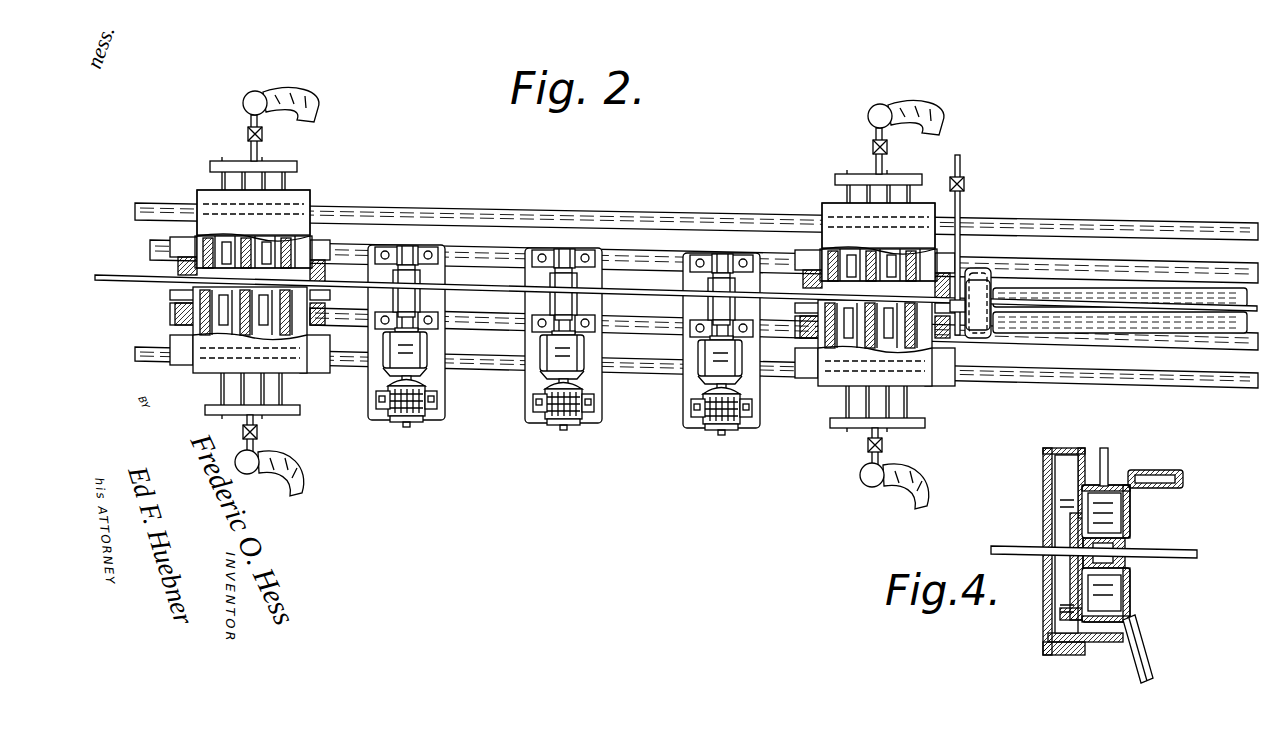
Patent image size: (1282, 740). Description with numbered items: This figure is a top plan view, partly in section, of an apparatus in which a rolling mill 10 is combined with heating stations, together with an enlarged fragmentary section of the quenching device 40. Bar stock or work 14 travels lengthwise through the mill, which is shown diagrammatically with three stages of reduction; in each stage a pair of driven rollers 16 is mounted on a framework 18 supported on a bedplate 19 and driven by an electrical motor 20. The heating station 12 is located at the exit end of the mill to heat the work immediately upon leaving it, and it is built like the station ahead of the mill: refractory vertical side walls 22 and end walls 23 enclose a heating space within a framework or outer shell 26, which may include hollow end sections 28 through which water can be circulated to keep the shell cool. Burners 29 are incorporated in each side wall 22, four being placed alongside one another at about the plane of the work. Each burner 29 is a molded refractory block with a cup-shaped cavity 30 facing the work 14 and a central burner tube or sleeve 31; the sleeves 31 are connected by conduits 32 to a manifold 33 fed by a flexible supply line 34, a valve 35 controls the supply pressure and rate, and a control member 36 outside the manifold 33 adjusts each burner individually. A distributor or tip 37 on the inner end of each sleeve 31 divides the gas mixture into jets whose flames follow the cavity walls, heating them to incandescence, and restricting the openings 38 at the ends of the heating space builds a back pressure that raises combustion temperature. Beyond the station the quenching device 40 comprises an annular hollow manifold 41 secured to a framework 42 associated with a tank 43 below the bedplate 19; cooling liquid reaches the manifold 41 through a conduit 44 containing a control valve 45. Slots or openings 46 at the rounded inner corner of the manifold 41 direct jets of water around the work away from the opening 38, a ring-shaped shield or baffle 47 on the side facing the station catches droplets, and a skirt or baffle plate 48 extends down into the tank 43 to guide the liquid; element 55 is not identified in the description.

In FIG. 2, the rolling mill 10 is at (169, 165).
In FIG. 2, the heating station 12 is at (824, 146).
In FIG. 2, the bar stock or work 14 is at (108, 284).
In FIG. 4, the bar stock or work 14 is at (1012, 548).
In FIG. 2, the driven roller 16 is at (421, 292).
In FIG. 2, the framework 18 is at (372, 263).
In FIG. 2, the bedplate 19 is at (488, 379).
In FIG. 2, the electrical motor 20 is at (378, 395).
In FIG. 2, the vertical side wall 22 is at (200, 215).
In FIG. 2, the end wall 23 is at (310, 262).
In FIG. 2, the framework or outer shell 26 is at (205, 192).
In FIG. 2, the hollow end section 28 is at (195, 242).
In FIG. 2, the burner 29 is at (300, 215).
In FIG. 2, the cup-shaped cavity or combustion space 30 is at (186, 292).
In FIG. 2, the burner tube or sleeve 31 is at (195, 330).
In FIG. 2, the conduit 32 is at (285, 183).
In FIG. 2, the manifold 33 is at (297, 166).
In FIG. 2, the flexible supply line 34 is at (291, 91).
In FIG. 2, the valve 35 is at (248, 134).
In FIG. 2, the control member 36 is at (251, 160).
In FIG. 2, the distributor or tip 37 is at (296, 372).
In FIG. 2, the opening 38 is at (318, 268).
In FIG. 2, the quenching device 40 is at (995, 274).
In FIG. 4, the quenching device 40 is at (1169, 456).
In FIG. 2, the annular-shaped hollow manifold 41 is at (986, 340).
In FIG. 4, the annular-shaped hollow manifold 41 is at (1128, 512).
In FIG. 4, the framework 42 is at (1170, 476).
In FIG. 2, the tank 43 is at (1115, 330).
In FIG. 2, the conduit 44 is at (963, 250).
In FIG. 4, the conduit 44 is at (1110, 466).
In FIG. 2, the control valve 45 is at (965, 186).
In FIG. 4, the openings or slots 46 is at (1127, 546).
In FIG. 4, the ring-shaped shield or baffle 47 is at (1064, 500).
In FIG. 4, the skirt or baffle plate 48 is at (1148, 660).
In FIG. 2, the plate 55 is at (176, 315).
In FIG. 4, the plate 55 is at (1046, 640).